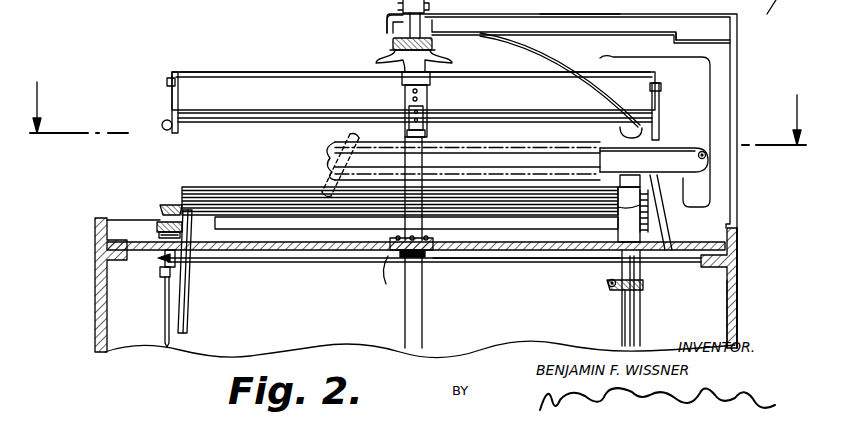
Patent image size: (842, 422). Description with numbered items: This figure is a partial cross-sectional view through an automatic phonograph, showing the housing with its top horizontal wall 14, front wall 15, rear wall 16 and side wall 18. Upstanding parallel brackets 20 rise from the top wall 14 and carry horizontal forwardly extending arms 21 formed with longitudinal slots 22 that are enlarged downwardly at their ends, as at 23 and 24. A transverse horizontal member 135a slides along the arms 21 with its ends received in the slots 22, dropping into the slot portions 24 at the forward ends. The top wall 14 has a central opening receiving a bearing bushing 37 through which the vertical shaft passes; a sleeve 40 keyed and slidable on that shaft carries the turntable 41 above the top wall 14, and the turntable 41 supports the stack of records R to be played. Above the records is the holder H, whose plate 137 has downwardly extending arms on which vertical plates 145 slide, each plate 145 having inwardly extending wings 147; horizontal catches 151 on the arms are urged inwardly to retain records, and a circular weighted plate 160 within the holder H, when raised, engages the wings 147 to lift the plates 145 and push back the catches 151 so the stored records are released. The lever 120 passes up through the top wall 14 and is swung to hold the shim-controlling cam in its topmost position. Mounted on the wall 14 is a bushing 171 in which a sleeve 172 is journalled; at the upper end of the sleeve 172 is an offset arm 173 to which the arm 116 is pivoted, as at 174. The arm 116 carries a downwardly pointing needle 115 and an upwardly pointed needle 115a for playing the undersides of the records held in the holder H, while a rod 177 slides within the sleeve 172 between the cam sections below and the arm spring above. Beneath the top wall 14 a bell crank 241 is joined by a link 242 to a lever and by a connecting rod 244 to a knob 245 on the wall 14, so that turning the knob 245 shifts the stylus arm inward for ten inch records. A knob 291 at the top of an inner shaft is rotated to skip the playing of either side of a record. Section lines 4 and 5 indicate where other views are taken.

The section line 4- 4 is at (418, 104).
The section line 5- 5 is at (765, 19).
The top horizontal wall 14 is at (300, 256).
The front wall 15 is at (95, 306).
The rear wall 16 is at (737, 302).
The side wall 18 is at (228, 10).
The upstanding parallel brackets 20 is at (742, 98).
The horizontal forwardly extending arms 21 is at (560, 12).
The longitudinal slots 22 is at (624, 30).
The enlarged slot end portion 23 is at (708, 36).
The enlarged slot end portion 24 is at (445, 47).
The bearing bushing 37 is at (385, 262).
The sleeve 40 is at (405, 326).
The turntable 41 is at (262, 231).
The downwardly pointing needle 115 is at (322, 171).
The upwardly pointed needle 115a is at (342, 140).
The arm 116 is at (690, 150).
The lever 120 is at (189, 289).
The transverse horizontal member 135a is at (393, 43).
The plate 137 is at (548, 70).
The vertical plate 145 is at (428, 100).
The wings 147 is at (402, 88).
The catch 151 is at (182, 134).
The circular weighted plate 160 is at (297, 110).
The bushing 171 is at (640, 222).
The sleeve 172 is at (628, 334).
The offset arm 173 is at (620, 194).
The pivot 174 is at (708, 160).
The rod 177 is at (632, 178).
The bell crank 241 is at (612, 286).
The link 242 is at (640, 314).
The connecting rod 244 is at (483, 264).
The knob 245 is at (155, 222).
The knob 291 is at (160, 204).
The holder H is at (297, 68).
The records R is at (268, 126).